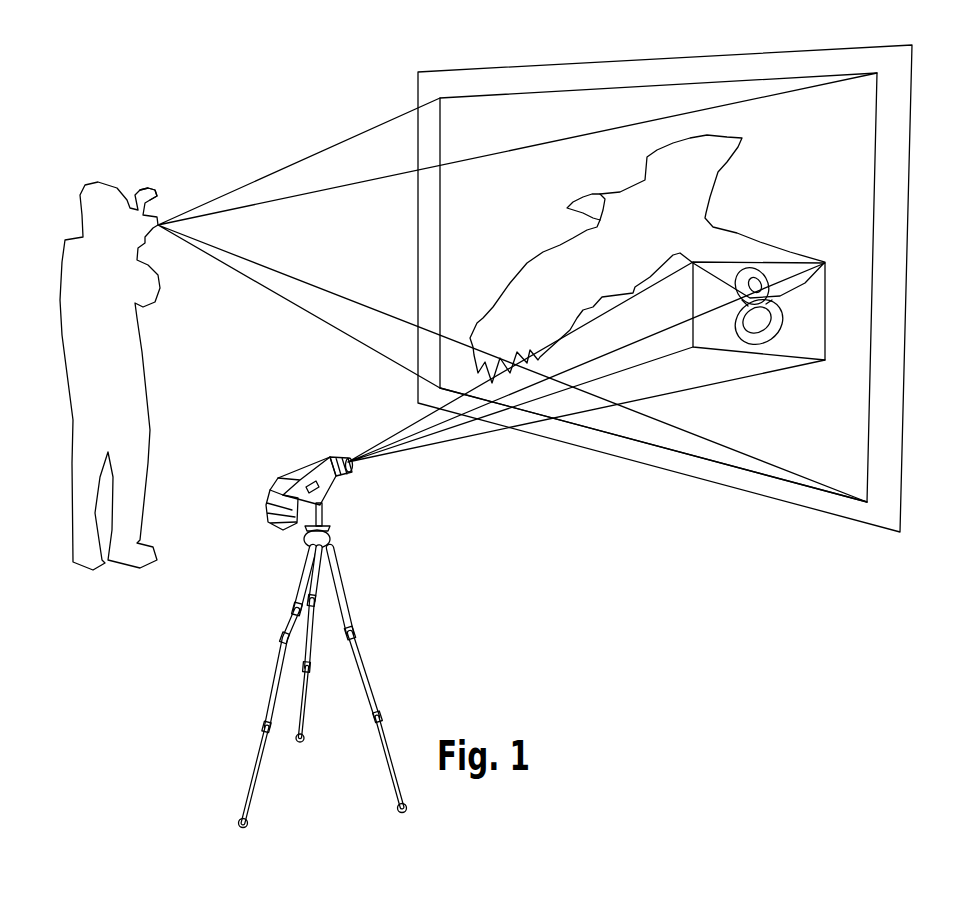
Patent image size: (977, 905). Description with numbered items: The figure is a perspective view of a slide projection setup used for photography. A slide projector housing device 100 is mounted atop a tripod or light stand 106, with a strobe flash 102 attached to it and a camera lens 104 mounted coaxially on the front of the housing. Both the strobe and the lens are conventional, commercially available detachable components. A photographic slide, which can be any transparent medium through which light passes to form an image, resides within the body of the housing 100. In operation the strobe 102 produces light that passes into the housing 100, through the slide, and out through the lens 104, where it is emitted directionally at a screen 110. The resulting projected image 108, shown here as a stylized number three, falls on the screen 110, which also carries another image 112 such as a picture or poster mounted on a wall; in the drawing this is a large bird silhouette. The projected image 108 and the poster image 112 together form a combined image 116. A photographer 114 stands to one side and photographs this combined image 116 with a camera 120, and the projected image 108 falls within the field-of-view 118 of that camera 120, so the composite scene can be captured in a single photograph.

The slide projector housing device 100 is at (277, 463).
The strobe flash 102 is at (266, 495).
The camera lens 104 is at (334, 447).
The tripod or light stand 106 is at (366, 620).
The projected image 108 is at (827, 302).
The screen 110 is at (902, 198).
The another image 112 is at (705, 143).
The photographer 114 is at (112, 181).
The combined image 116 is at (651, 84).
The field-of-view 118 is at (752, 478).
The photographer's camera 120 is at (156, 183).